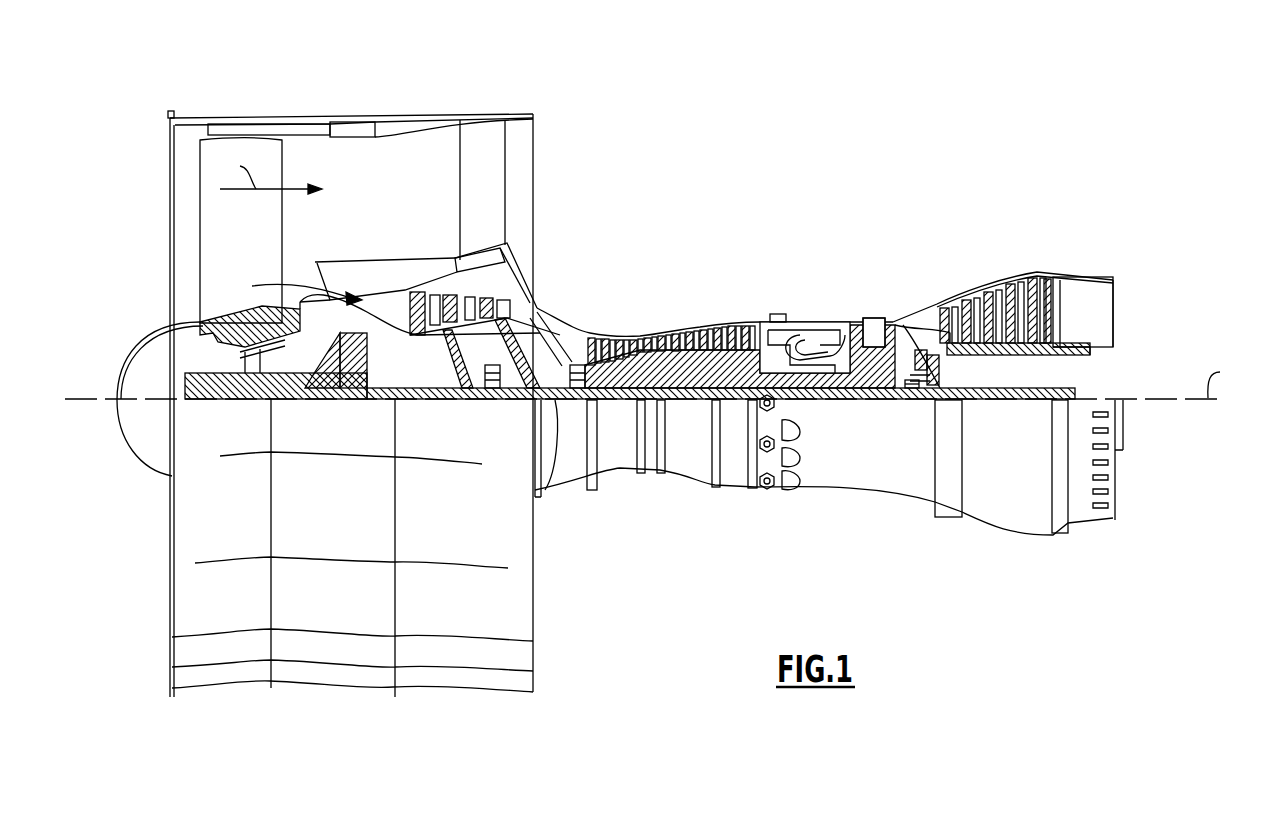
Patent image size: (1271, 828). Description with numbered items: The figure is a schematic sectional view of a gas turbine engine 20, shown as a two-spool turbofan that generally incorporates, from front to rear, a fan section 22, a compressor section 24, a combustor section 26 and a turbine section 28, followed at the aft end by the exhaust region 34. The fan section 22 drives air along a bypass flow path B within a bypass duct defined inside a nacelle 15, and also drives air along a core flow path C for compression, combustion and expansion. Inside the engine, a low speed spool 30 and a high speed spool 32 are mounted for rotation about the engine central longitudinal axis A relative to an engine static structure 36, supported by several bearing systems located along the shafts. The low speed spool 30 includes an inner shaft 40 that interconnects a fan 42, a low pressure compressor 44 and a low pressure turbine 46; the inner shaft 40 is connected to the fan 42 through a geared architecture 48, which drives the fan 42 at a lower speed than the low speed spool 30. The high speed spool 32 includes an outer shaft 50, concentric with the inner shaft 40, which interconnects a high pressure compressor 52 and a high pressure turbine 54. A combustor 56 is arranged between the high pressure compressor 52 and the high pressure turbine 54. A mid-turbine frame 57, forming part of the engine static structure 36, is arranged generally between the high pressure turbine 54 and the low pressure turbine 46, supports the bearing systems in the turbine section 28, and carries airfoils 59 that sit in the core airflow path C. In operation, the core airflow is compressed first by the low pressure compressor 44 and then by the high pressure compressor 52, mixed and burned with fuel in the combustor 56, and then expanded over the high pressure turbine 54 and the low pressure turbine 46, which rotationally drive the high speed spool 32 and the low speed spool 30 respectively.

The nacelle 15 is at (352, 125).
The gas turbine engine 20 is at (652, 371).
The fan section 22 is at (325, 371).
The compressor section 24 is at (585, 300).
The combustor section 26 is at (799, 305).
The turbine section 28 is at (993, 359).
The low speed spool 30 is at (721, 455).
The high speed spool 32 is at (725, 350).
The turbine exhaust case 34 is at (1043, 277).
The engine static structure 36 is at (824, 473).
The inner shaft 40 is at (552, 414).
The fan 42 is at (256, 244).
The low pressure compressor 44 is at (462, 308).
The low pressure turbine 46 is at (999, 290).
The geared architecture 48 is at (357, 382).
The outer shaft 50 is at (822, 392).
The high pressure compressor 52 is at (668, 364).
The high pressure turbine 54 is at (870, 317).
The combustor 56 is at (803, 340).
The mid-turbine frame 57 is at (918, 302).
The airfoils 59 is at (930, 338).